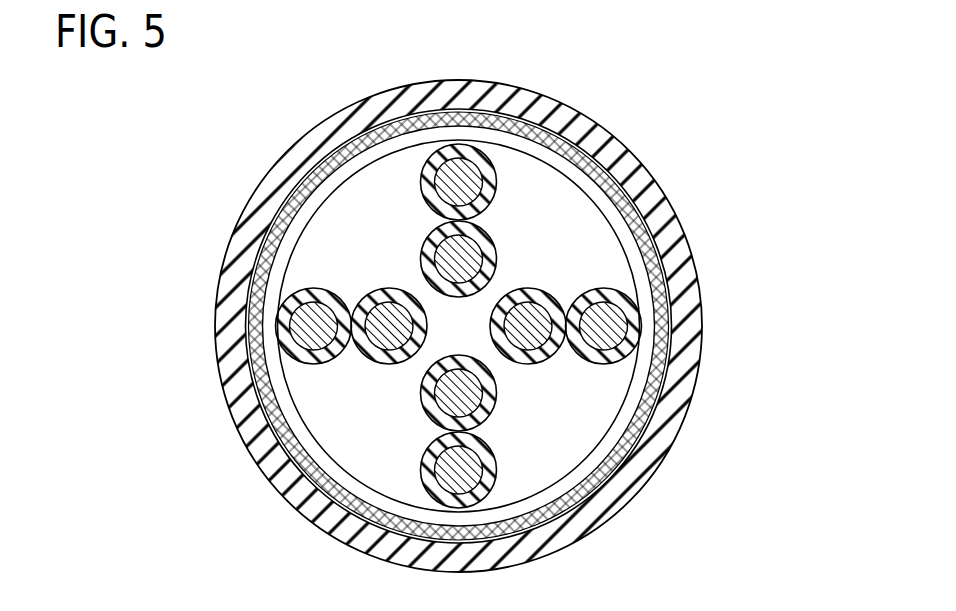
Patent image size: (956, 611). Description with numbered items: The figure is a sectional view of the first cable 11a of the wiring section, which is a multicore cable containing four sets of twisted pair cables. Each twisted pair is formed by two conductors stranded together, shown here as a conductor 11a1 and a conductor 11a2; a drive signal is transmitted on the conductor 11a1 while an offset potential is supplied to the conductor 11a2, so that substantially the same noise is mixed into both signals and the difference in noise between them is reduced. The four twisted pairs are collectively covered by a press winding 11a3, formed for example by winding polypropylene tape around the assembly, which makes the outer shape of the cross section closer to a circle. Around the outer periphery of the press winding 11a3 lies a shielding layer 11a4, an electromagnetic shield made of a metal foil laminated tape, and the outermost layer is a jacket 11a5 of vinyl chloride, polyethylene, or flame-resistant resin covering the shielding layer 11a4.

The first cable 11a is at (496, 294).
The conductor 11a1 is at (548, 297).
The conductor 11a2 is at (611, 354).
The press winding 11a3 is at (372, 142).
The shielding layer 11a4 is at (457, 120).
The jacket 11a5 is at (546, 100).